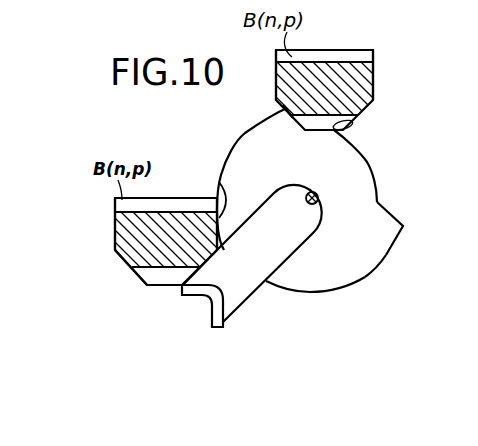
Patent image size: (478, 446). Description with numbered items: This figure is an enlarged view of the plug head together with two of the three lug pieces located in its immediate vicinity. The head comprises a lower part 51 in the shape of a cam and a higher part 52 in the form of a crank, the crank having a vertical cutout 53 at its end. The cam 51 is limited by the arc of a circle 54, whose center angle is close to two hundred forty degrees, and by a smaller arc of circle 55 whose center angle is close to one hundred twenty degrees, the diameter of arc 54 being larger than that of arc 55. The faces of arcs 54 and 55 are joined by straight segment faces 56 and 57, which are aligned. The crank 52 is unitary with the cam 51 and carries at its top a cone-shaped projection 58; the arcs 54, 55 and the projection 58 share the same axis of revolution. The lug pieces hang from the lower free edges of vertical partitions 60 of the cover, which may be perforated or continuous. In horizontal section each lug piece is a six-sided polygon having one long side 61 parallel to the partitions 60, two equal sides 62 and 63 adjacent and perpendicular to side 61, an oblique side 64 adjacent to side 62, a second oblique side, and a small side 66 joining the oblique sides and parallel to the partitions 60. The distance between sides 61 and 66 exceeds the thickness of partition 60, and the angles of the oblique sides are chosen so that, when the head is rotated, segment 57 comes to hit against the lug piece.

The lower part 51 is at (375, 246).
The higher part 52 is at (247, 270).
The vertical cutout 53 is at (202, 300).
The arc of a circle 54 is at (350, 288).
The arc of circle 55 is at (378, 176).
The straight segment face 56 is at (392, 212).
The straight segment face 57 is at (293, 119).
The cone-shaped projection 58 is at (320, 195).
The vertical partition 60 is at (357, 97).
The long side 61 is at (333, 50).
The side 62 is at (276, 84).
The side 63 is at (375, 78).
The oblique side 64 is at (132, 272).
The small side 66 is at (352, 122).